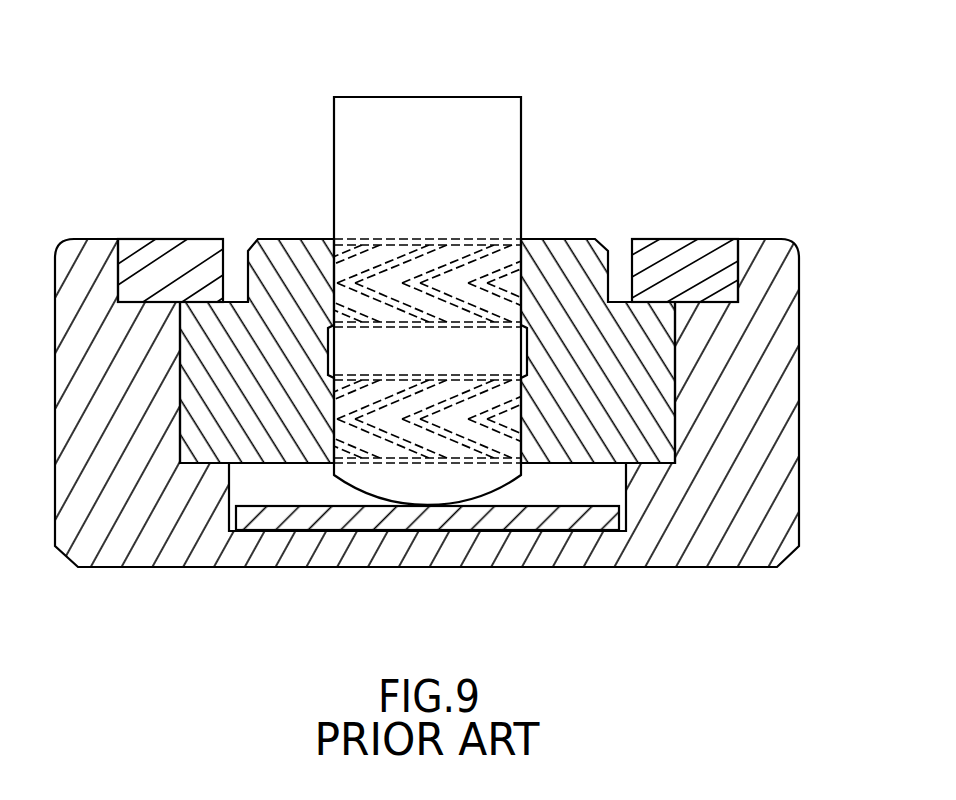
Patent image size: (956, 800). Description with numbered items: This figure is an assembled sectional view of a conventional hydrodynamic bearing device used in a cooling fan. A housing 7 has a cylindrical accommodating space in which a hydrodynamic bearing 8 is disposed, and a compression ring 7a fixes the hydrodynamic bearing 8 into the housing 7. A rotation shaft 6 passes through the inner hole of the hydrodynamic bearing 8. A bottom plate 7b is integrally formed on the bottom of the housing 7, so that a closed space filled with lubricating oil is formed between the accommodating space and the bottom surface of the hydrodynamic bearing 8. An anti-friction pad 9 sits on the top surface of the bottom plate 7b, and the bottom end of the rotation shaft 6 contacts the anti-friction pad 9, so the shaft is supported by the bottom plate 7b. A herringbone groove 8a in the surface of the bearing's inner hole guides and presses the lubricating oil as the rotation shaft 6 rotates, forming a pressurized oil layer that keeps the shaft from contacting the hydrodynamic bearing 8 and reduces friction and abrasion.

The rotation shaft 6 is at (447, 113).
The housing 7 is at (762, 241).
The compression ring 7a is at (678, 239).
The bottom plate 7b is at (386, 553).
The hydrodynamic bearing 8 is at (558, 239).
The herringbone groove 8a is at (362, 255).
The anti-friction pad 9 is at (572, 517).